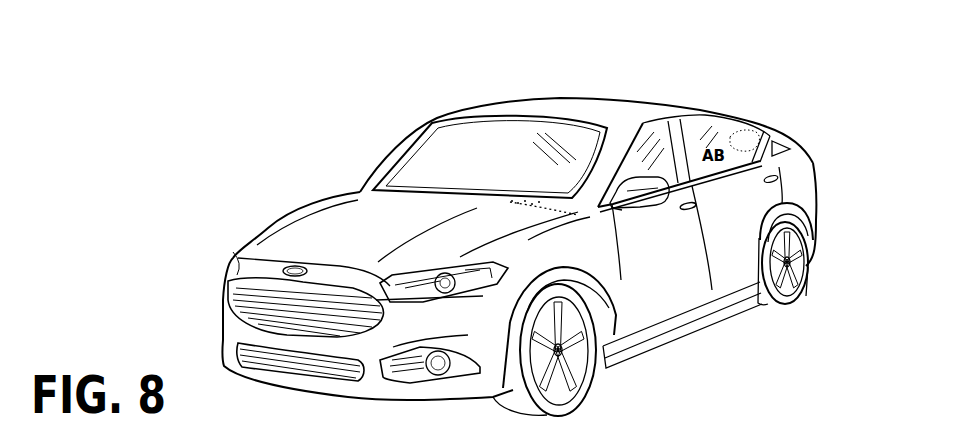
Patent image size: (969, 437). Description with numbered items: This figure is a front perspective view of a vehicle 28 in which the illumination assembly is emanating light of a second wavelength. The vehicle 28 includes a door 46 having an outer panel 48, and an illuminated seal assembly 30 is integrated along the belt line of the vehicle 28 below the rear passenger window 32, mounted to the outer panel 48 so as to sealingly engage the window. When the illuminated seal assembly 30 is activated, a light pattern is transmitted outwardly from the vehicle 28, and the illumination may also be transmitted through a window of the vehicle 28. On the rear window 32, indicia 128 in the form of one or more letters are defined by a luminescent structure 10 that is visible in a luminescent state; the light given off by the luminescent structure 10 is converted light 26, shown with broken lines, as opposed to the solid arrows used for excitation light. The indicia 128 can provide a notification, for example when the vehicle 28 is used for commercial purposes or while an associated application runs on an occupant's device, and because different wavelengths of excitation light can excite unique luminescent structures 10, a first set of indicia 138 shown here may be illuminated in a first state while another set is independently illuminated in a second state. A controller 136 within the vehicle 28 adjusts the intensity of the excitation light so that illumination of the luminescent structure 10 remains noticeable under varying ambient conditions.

The luminescent structure 10 is at (722, 135).
The converted light 26 is at (755, 145).
The vehicle 28 is at (318, 197).
The illuminated seal assembly 30 is at (728, 177).
The rear passenger window 32 is at (755, 120).
The door 46 is at (728, 283).
The outer panel 48 is at (747, 267).
The indicia 128 is at (733, 130).
The controller 136 is at (578, 215).
The first set of indicia 138 is at (724, 160).